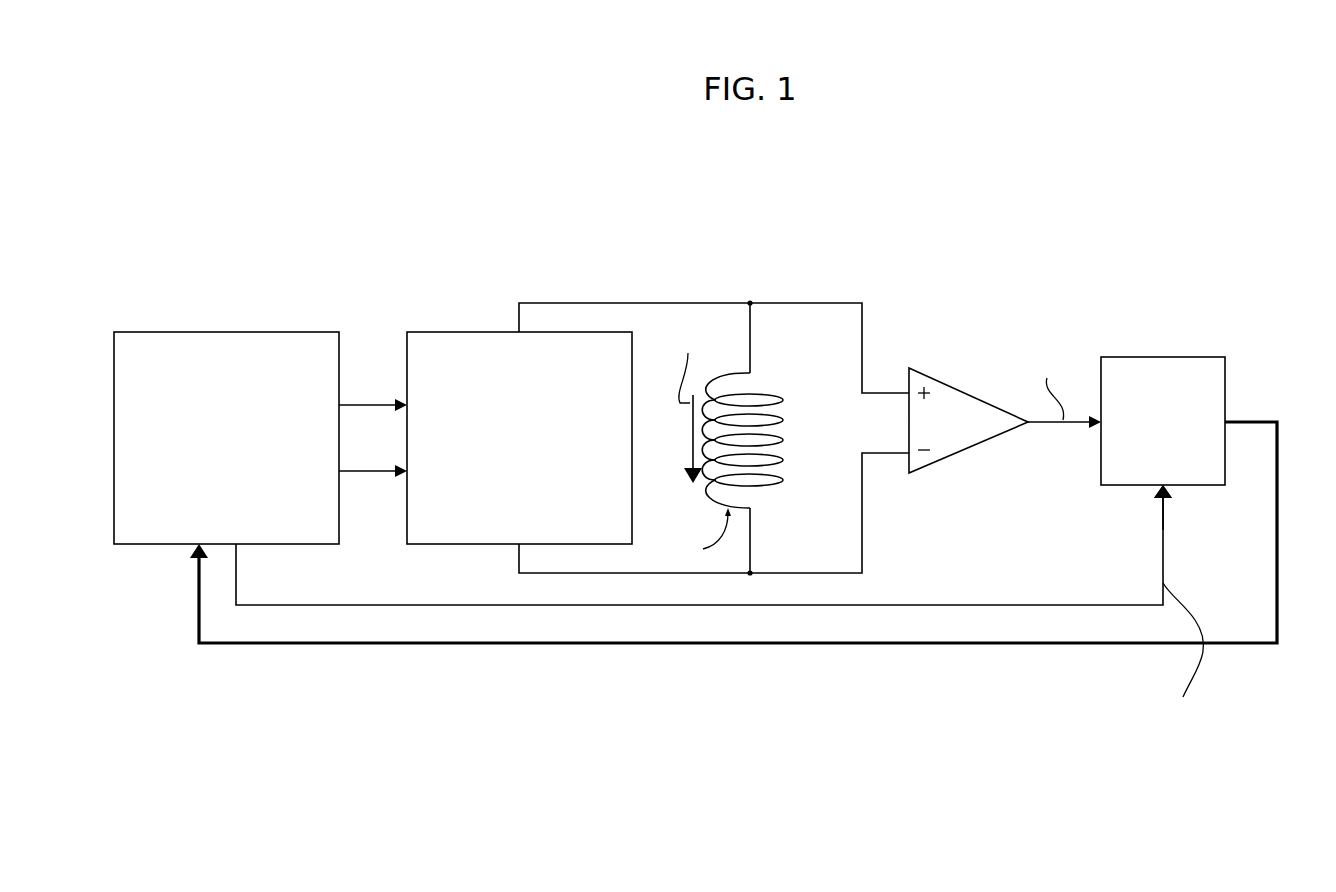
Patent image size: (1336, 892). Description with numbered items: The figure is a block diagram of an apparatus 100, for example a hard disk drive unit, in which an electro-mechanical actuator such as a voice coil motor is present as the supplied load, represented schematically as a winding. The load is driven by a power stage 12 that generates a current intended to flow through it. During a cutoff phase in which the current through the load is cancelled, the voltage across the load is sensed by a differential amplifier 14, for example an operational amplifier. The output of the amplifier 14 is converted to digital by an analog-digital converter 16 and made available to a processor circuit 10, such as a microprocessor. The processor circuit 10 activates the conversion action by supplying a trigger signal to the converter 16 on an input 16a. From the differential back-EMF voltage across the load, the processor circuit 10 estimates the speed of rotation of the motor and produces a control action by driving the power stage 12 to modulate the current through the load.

The processor circuit 10 is at (200, 350).
The power stage 12 is at (452, 350).
The differential amplifier 14 is at (981, 406).
The analog-digital converter 16 is at (1152, 372).
The input 16a is at (1170, 489).
The apparatus 100 is at (515, 737).